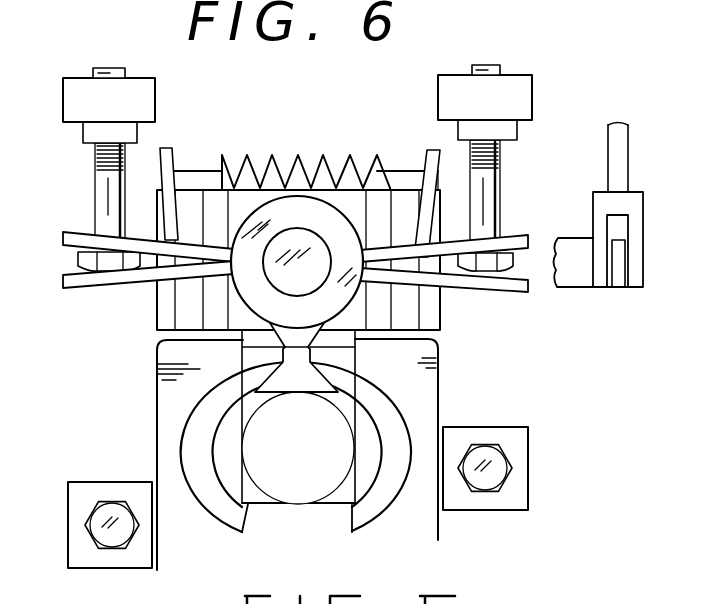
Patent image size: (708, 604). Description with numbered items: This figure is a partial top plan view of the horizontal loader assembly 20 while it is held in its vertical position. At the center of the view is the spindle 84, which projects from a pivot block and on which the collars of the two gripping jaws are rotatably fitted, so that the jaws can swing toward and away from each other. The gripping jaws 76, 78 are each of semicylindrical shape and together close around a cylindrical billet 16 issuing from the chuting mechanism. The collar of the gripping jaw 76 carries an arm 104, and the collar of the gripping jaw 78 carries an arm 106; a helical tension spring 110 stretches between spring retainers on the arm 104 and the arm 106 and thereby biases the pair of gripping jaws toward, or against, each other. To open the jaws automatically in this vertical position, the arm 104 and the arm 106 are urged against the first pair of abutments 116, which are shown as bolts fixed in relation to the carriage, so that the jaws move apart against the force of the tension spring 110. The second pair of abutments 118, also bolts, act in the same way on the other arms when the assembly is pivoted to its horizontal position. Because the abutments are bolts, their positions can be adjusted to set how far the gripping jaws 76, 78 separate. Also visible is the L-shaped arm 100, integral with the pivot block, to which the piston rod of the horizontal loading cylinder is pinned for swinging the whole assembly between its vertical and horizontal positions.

The horizontal loader assembly 20 is at (563, 93).
The helical tension spring 110 is at (302, 153).
The first pair of abutments 116 is at (104, 196).
The arm 104 is at (73, 287).
The arm 106 is at (508, 291).
The L-shaped arm 100 is at (578, 277).
The spindle 84 is at (313, 279).
The gripping jaw 78 is at (190, 417).
The gripping jaw 76 is at (398, 406).
The billet 16 is at (333, 505).
The second pair of abutments 118 is at (112, 535).